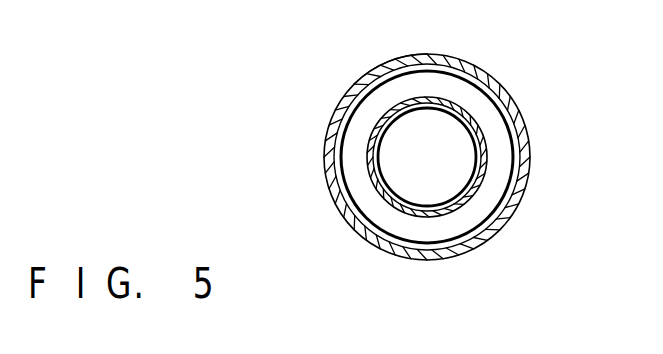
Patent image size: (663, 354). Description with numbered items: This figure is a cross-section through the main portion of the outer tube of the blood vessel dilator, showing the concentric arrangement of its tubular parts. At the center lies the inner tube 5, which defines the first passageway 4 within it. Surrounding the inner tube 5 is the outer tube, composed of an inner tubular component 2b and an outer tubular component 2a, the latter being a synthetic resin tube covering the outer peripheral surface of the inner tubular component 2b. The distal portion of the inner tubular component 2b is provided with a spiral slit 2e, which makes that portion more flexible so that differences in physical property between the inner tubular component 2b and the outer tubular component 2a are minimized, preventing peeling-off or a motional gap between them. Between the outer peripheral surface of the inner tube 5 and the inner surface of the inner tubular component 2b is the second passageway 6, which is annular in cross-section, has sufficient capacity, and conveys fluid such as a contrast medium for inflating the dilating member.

The outer tubular component 2a is at (470, 62).
The inner tubular component 2b is at (510, 112).
The spiral slit 2e is at (400, 59).
The first passageway 4 is at (398, 155).
The inner tube 5 is at (377, 190).
The second passageway 6 is at (497, 185).